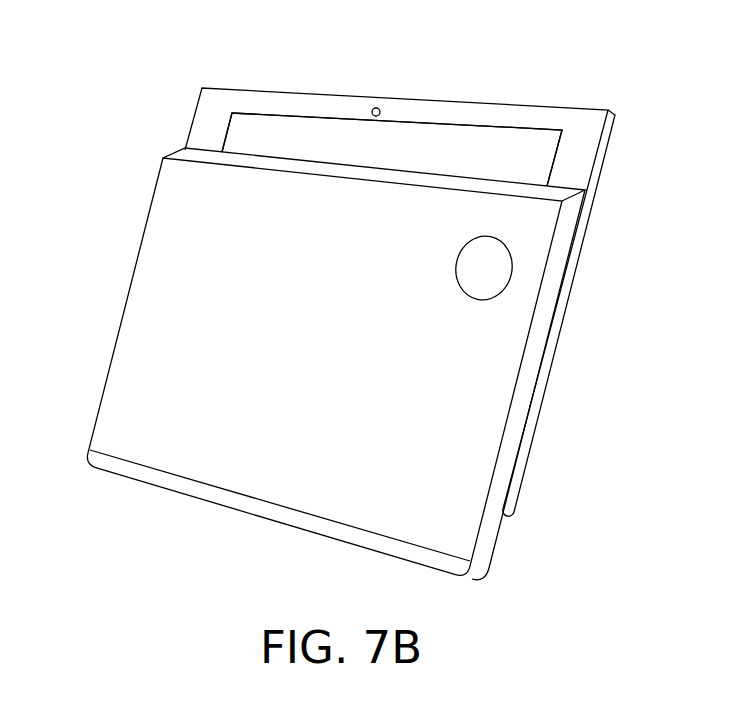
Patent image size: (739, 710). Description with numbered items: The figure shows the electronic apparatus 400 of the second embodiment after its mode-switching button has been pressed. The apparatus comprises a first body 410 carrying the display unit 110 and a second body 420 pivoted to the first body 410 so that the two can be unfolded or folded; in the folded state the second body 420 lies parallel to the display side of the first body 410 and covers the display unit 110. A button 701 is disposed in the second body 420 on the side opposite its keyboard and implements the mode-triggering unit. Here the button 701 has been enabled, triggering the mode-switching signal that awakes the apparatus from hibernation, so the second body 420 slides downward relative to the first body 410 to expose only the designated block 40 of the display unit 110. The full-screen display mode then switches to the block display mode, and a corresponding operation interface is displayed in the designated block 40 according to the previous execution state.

The electronic apparatus 400 is at (385, 325).
The first body 410 is at (603, 163).
The second body 420 is at (365, 364).
The display unit 110 is at (470, 127).
The designated block 40 is at (303, 135).
The button 701 is at (497, 273).